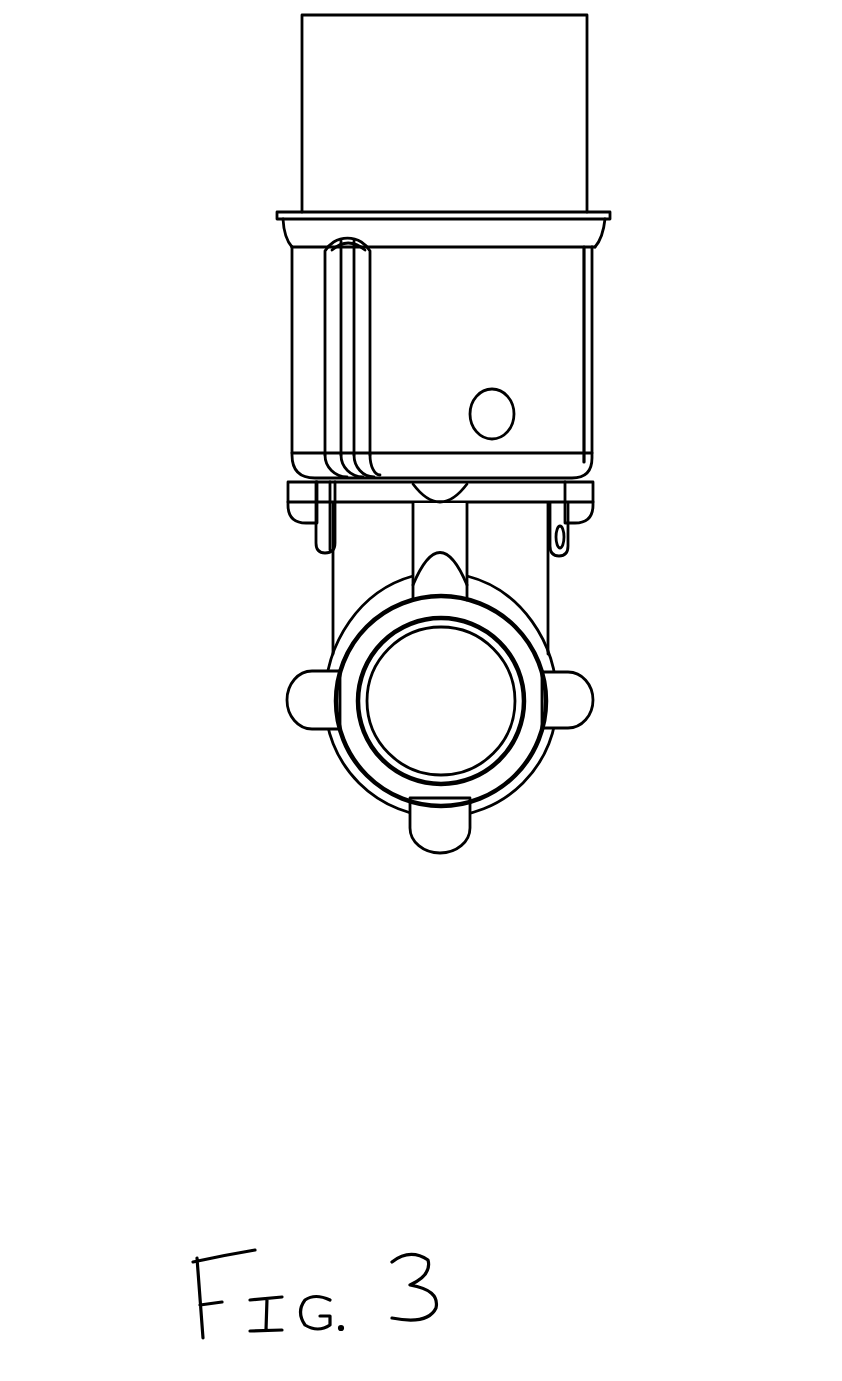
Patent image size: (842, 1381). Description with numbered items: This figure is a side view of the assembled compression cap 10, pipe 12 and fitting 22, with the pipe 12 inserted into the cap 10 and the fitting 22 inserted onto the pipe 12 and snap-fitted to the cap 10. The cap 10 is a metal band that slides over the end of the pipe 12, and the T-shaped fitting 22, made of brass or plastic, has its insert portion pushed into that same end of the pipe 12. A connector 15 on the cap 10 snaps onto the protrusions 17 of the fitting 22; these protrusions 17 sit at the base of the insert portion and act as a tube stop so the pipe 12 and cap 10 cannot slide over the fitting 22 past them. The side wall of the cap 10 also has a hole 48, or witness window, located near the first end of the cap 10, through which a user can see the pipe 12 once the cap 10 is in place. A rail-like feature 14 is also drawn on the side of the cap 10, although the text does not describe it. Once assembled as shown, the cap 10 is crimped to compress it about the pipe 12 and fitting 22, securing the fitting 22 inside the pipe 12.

The compression cap 10 is at (550, 318).
The pipe 12 is at (333, 78).
The guide rail 14 is at (344, 345).
The connector 15 is at (312, 549).
The protrusions 17 is at (288, 505).
The fitting 22 is at (521, 757).
The hole 48 is at (515, 414).